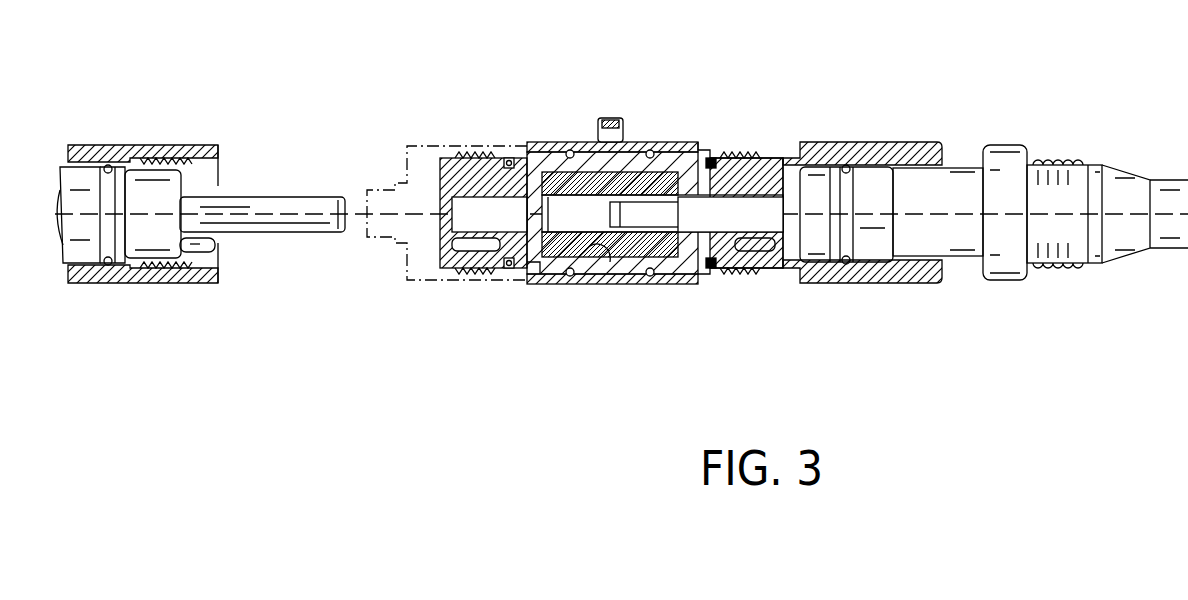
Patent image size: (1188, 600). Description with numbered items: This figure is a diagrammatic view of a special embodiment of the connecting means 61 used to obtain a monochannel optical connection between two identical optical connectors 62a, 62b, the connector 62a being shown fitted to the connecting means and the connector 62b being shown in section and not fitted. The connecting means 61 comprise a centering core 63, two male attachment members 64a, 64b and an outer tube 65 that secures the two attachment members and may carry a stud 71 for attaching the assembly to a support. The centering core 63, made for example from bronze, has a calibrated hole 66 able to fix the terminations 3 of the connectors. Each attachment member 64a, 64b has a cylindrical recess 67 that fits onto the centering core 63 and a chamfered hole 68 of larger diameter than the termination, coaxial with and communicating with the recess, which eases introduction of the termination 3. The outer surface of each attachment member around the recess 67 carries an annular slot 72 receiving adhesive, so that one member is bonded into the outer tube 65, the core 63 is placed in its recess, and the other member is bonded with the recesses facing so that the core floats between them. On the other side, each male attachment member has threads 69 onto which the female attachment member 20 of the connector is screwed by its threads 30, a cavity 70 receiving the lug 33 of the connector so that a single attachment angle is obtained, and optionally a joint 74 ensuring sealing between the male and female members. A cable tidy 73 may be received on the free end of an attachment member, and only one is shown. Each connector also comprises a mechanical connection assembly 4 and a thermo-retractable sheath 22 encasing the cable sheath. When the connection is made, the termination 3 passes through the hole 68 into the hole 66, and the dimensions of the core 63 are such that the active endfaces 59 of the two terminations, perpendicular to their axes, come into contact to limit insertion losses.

The termination 3 is at (252, 193).
The mechanical connection assembly 4 is at (965, 160).
The attachment member 20 is at (110, 276).
The thermo-retractable sheath 22 is at (1118, 168).
The threads 30 is at (192, 158).
The lug 33 is at (222, 254).
The active endfaces 59 is at (345, 200).
The connecting means 61 is at (636, 233).
The optical connector 62a is at (1069, 207).
The optical connector 62b is at (520, 208).
The centering core 63 is at (665, 284).
The attachment member 64a is at (762, 176).
The attachment member 64b is at (482, 175).
The outer tube 65 is at (576, 144).
The hole 66 is at (530, 270).
The recess 67 is at (695, 150).
The hole 68 is at (478, 208).
The threads 69 is at (467, 158).
The cavity 70 is at (462, 245).
The stud 71 is at (640, 125).
The annular slot 72 is at (582, 283).
The cable tidy 73 is at (405, 148).
The joint 74 is at (715, 272).